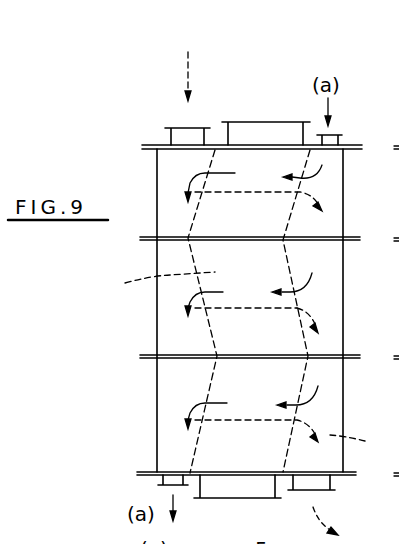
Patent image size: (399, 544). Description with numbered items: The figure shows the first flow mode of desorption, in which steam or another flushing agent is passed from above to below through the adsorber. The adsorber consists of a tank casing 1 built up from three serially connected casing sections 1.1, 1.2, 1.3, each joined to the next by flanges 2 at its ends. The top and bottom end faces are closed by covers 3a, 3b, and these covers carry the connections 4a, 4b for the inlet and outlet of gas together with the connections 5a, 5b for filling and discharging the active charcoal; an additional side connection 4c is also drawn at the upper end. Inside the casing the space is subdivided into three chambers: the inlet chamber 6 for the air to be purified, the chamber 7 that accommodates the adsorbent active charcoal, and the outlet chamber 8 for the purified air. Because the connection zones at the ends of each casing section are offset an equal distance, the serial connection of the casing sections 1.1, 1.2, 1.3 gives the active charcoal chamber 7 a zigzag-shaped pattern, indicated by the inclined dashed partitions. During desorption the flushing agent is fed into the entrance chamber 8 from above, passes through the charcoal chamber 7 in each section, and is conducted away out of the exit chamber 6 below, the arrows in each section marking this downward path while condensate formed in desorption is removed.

The tank casing 1 is at (157, 398).
The casing section 1.1 is at (343, 197).
The casing section 1.2 is at (343, 285).
The casing section 1.3 is at (343, 402).
The flanges 2 is at (142, 146).
The cover 3a is at (215, 138).
The cover 3b is at (396, 478).
The connection 4a is at (185, 136).
The connection 4b is at (308, 493).
The upper side inlet nozzle 4c is at (358, 116).
The connection 5a is at (272, 135).
The connection 5b is at (236, 498).
The inlet chamber 6 is at (398, 172).
The active charcoal chamber 7 is at (160, 285).
The outlet chamber 8 is at (355, 441).